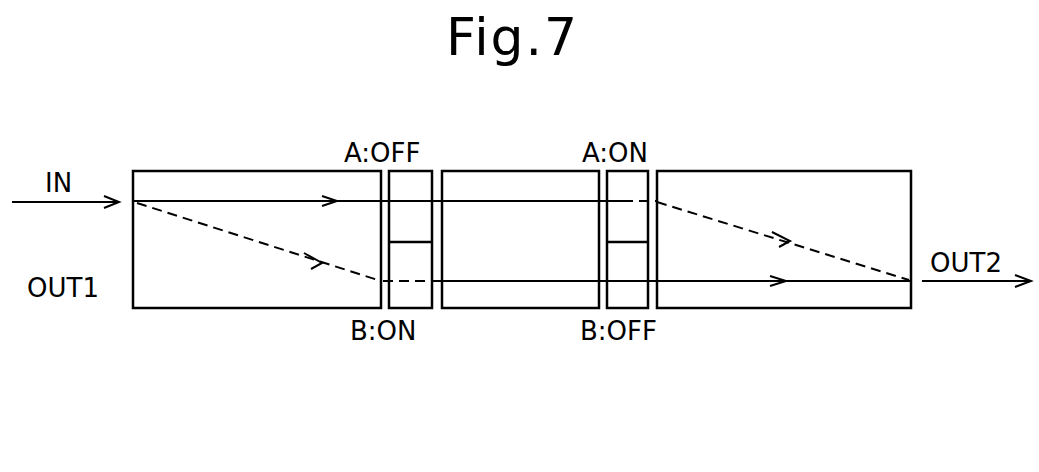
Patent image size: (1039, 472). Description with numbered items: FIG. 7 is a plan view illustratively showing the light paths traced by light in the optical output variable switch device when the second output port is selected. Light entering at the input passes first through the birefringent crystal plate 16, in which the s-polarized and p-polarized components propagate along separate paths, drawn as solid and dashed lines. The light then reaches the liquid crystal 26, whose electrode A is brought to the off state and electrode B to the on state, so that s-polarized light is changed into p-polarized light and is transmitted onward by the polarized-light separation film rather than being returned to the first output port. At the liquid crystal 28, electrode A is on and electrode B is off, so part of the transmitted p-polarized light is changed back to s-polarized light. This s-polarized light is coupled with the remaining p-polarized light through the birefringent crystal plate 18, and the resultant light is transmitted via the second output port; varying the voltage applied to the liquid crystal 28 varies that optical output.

The birefringent crystal plate 16 is at (226, 171).
The liquid crystal 26 is at (426, 173).
The liquid crystal 28 is at (641, 176).
The birefringent crystal plate 18 is at (852, 171).